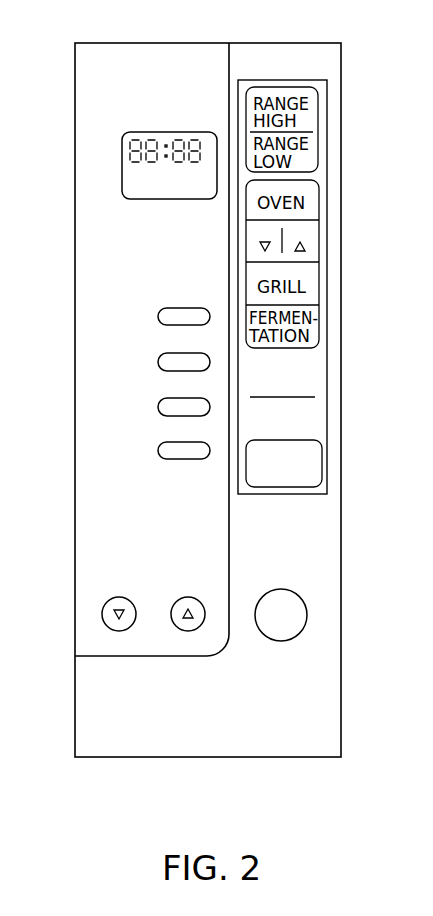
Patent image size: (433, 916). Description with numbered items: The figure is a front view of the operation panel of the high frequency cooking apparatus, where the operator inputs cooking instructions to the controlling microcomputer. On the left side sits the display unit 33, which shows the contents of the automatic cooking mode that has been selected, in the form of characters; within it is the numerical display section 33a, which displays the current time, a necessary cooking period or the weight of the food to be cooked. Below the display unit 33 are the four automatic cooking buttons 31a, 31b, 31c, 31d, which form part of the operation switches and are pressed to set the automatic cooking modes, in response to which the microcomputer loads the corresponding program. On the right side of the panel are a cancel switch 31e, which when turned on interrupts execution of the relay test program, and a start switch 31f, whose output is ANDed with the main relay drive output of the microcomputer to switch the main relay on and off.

The display unit 33 is at (172, 132).
The numerical display section 33a is at (122, 147).
The automatic cooking button 31a is at (185, 308).
The automatic cooking button 31b is at (180, 353).
The automatic cooking button 31c is at (180, 398).
The automatic cooking button 31d is at (180, 442).
The cancel switch 31e is at (314, 415).
The start switch 31f is at (322, 447).